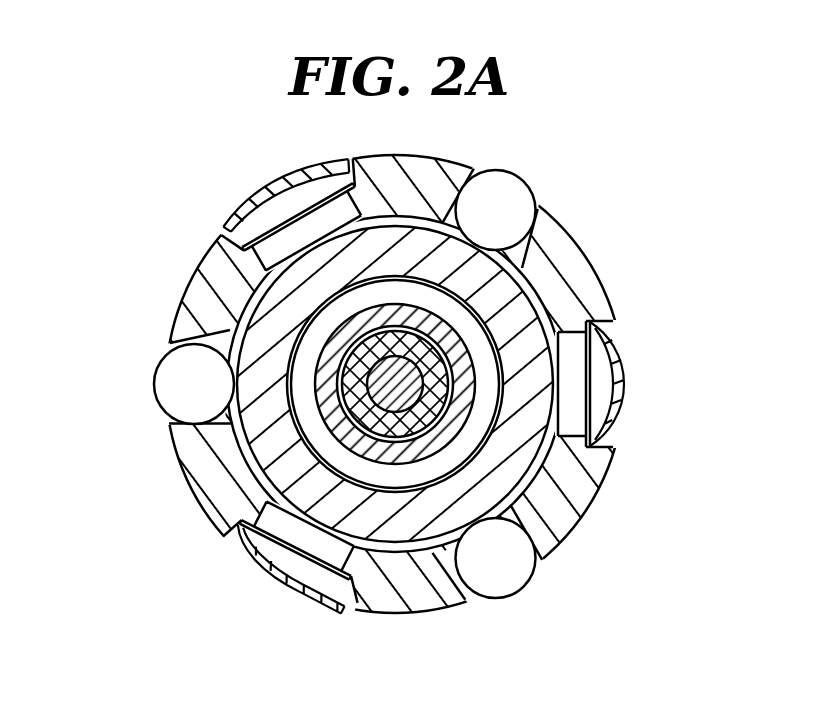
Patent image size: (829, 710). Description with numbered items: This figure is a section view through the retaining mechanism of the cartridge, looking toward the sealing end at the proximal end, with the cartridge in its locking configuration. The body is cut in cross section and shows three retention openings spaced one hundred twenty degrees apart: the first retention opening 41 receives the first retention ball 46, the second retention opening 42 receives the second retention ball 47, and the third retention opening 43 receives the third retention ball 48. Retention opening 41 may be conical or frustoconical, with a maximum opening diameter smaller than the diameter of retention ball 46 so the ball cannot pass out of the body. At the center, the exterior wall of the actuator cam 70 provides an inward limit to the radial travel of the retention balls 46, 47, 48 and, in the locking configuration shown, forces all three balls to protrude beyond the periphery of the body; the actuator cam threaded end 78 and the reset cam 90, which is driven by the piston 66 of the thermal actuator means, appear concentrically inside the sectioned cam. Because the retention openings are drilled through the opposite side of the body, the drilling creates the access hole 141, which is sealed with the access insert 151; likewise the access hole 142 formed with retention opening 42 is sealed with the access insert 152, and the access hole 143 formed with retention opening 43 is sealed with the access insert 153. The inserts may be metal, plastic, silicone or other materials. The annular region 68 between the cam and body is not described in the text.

The first retention opening 41 is at (228, 322).
The second retention opening 42 is at (443, 553).
The third retention opening 43 is at (520, 258).
The first retention ball 46 is at (190, 387).
The second retention ball 47 is at (517, 567).
The third retention ball 48 is at (501, 212).
The piston 66 is at (440, 335).
The annular gap 68 is at (250, 480).
The actuator cam 70 is at (277, 323).
The actuator cam threaded end 78 is at (363, 411).
The reset cam 90 is at (437, 447).
The access hole 141 is at (568, 393).
The access hole 142 is at (316, 224).
The access hole 143 is at (243, 557).
The access insert 151 is at (595, 362).
The access insert 152 is at (262, 190).
The access insert 153 is at (282, 565).